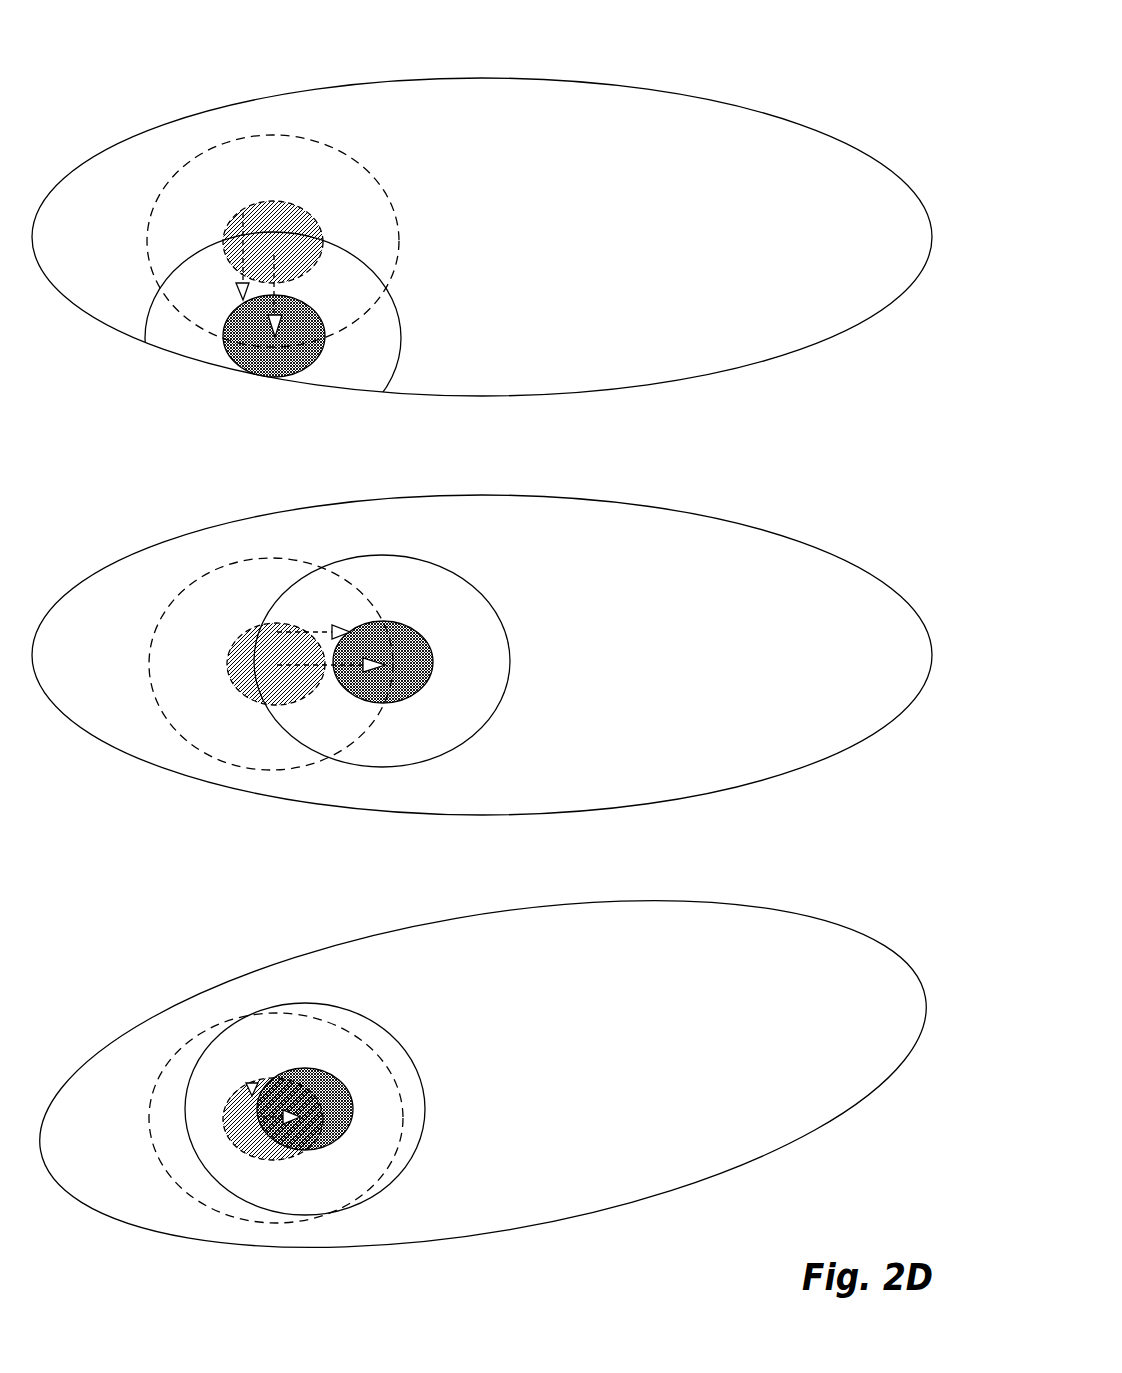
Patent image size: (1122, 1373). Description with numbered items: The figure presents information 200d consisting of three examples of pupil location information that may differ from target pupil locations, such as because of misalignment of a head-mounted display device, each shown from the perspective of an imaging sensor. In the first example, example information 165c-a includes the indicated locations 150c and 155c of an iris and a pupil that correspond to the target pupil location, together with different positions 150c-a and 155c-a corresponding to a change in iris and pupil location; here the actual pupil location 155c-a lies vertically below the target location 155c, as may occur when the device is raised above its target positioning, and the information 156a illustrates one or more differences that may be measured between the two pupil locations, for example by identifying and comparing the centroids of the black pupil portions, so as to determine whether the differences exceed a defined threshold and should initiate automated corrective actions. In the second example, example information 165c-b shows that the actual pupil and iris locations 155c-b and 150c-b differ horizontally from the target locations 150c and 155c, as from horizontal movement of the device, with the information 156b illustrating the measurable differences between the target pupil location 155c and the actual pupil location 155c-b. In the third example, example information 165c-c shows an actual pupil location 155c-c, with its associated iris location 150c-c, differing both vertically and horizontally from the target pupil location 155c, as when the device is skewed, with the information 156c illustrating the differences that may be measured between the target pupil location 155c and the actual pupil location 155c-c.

The information 200d is at (853, 77).
The example information 165c-a is at (122, 143).
The example information 165c-b is at (142, 555).
The example information 165c-c is at (145, 1030).
The indicated location of an iris 150c is at (397, 200).
The position of iris 150c-a is at (398, 355).
The iris location 150c-b is at (509, 675).
The iris location 150c-c is at (425, 1115).
The indicated location of a pupil 155c is at (308, 217).
The actual pupil location 155c-a is at (313, 367).
The actual pupil location 155c-b is at (409, 696).
The actual pupil location 155c-c is at (325, 1148).
The information 156a is at (273, 252).
The information 156b is at (270, 634).
The information 156c is at (276, 1118).